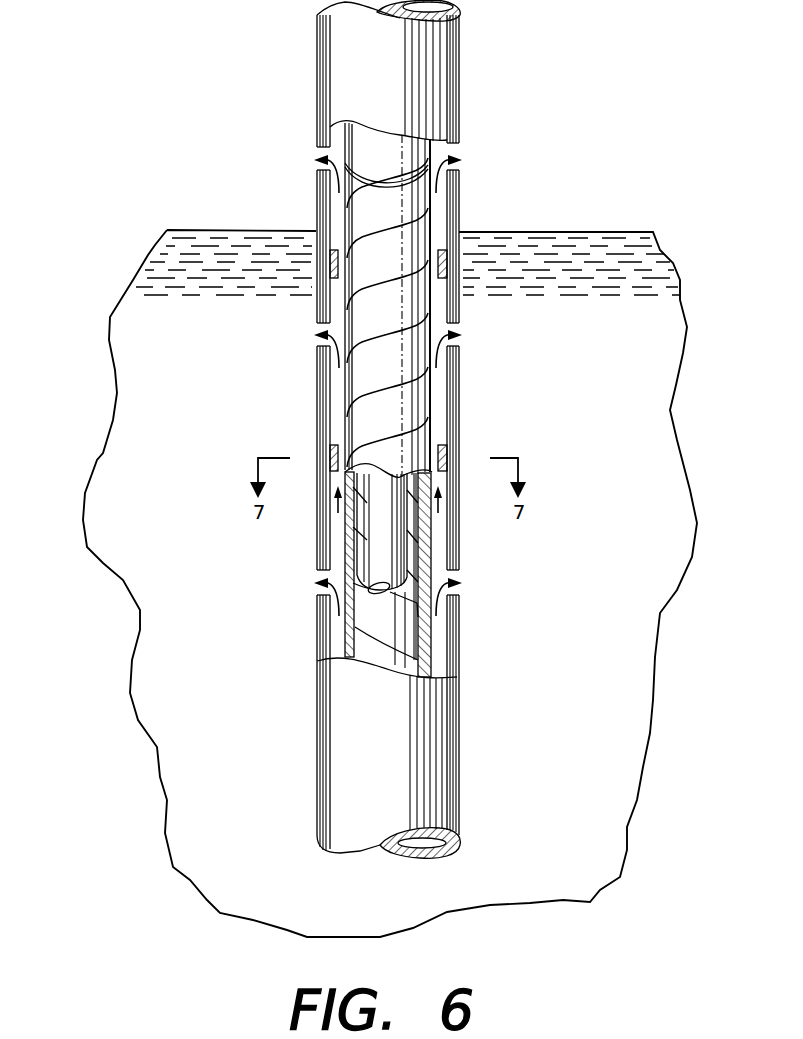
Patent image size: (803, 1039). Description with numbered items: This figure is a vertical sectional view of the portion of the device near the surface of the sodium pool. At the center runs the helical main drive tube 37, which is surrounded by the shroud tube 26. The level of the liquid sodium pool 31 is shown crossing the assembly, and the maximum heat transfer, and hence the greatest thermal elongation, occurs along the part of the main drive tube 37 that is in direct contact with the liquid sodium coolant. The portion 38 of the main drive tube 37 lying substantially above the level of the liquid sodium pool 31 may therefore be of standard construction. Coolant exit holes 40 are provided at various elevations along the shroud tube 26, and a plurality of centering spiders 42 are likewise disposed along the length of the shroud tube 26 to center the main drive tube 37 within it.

The shroud tube 26 is at (370, 778).
The liquid sodium pool 31 is at (576, 318).
The helical main drive tube 37 is at (377, 381).
The portion of main drive tube 38 is at (363, 162).
The coolant exit holes 40 is at (460, 164).
The centering spiders 42 is at (447, 265).